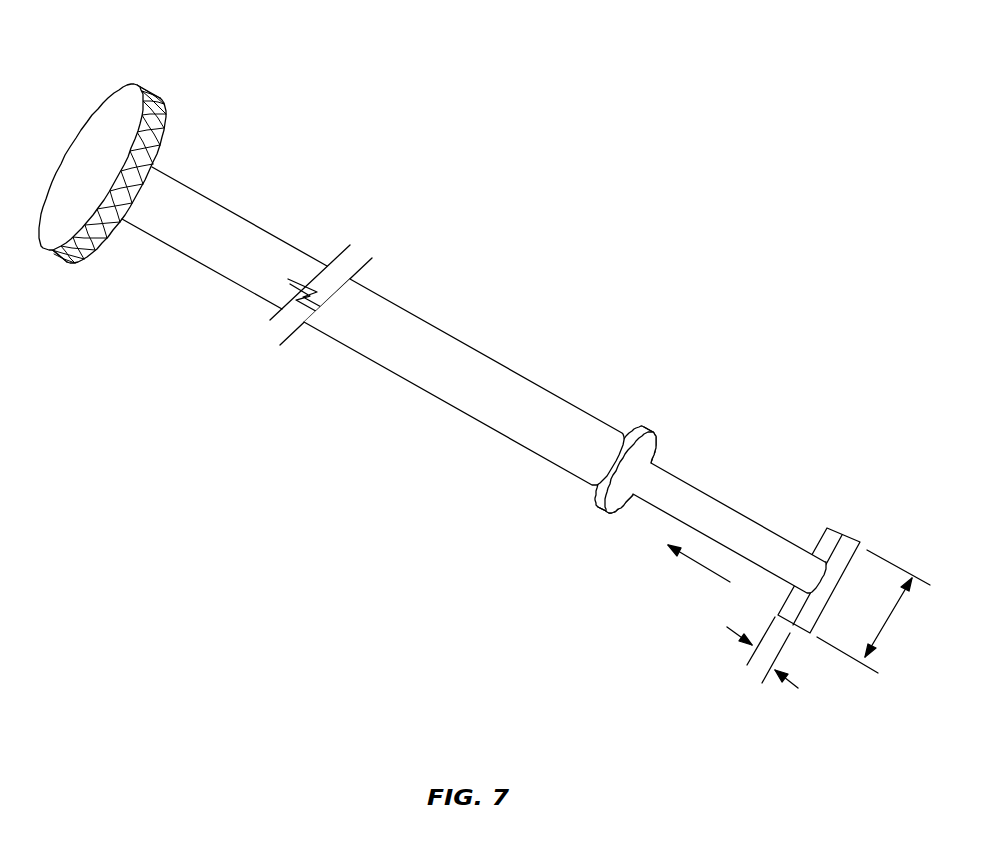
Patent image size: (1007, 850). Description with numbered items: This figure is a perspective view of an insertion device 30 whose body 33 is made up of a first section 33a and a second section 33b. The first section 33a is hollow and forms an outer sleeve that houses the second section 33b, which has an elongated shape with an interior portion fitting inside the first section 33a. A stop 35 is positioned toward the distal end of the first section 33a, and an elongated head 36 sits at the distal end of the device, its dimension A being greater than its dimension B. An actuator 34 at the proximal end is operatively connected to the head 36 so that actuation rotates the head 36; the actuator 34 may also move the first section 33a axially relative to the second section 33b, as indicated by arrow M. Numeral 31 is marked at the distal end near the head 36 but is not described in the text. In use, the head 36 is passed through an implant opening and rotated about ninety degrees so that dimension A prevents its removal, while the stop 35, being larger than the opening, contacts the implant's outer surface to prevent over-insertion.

The insertion device 30 is at (484, 366).
The distal engagement portion 31 is at (845, 513).
The body 33 is at (517, 391).
The first section 33a is at (418, 331).
The second section 33b is at (695, 502).
The actuator 34 is at (110, 143).
The stop 35 is at (662, 442).
The head 36 is at (840, 530).